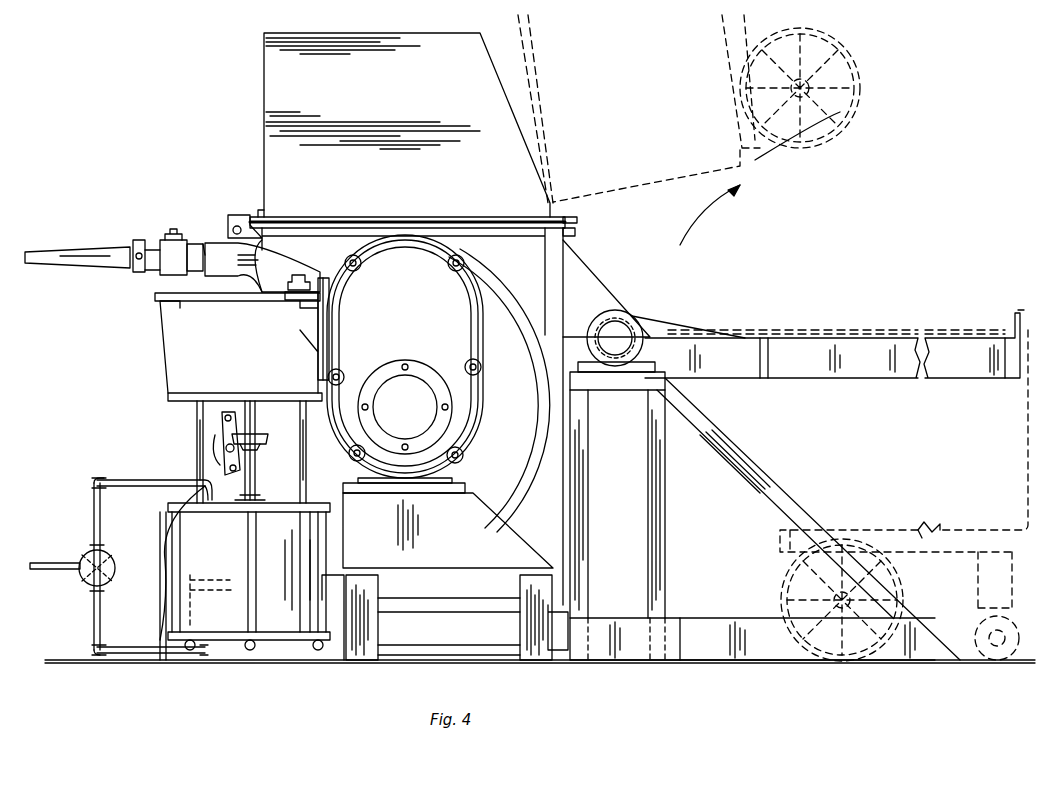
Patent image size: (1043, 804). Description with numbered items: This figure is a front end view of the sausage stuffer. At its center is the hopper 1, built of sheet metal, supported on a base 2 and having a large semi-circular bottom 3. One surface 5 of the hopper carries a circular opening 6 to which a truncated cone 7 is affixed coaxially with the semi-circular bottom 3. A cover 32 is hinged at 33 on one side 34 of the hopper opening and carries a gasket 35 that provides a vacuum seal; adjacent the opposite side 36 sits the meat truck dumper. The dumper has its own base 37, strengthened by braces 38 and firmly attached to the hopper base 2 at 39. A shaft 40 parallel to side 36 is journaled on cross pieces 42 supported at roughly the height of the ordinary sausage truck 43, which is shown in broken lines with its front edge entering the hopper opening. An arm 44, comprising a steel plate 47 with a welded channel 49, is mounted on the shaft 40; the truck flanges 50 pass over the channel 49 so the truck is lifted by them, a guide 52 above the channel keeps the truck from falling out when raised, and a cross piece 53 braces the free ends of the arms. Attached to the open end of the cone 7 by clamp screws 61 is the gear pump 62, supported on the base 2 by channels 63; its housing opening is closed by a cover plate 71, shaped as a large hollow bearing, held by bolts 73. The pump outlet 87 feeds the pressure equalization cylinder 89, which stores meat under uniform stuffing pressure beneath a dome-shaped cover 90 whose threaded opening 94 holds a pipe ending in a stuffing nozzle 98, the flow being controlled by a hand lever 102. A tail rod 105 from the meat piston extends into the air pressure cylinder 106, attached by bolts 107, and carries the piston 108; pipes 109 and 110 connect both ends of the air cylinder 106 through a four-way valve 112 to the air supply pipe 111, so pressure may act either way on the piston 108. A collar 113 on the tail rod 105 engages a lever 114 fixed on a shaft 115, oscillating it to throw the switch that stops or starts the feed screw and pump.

The hopper 1 is at (496, 250).
The base 2 is at (522, 632).
The semi-circular bottom 3 is at (530, 528).
The hopper surface 5 is at (553, 283).
The circular opening 6 is at (540, 312).
The truncated cone 7 is at (505, 413).
The cover 32 is at (318, 47).
The hinge 33 is at (240, 215).
The hinged side 34 is at (262, 216).
The gasket 35 is at (575, 220).
The hopper side 36 is at (574, 233).
The dumper base 37 is at (685, 635).
The braces 38 is at (788, 502).
The attachment 39 is at (588, 645).
The shaft 40 is at (620, 334).
The cross pieces 42 is at (640, 383).
The sausage truck 43 is at (742, 165).
The arm 44 is at (860, 372).
The steel plate 47 is at (680, 335).
The channel 49 is at (970, 375).
The flanges 50 is at (1024, 308).
The guide 52 is at (812, 330).
The cross piece 53 is at (1012, 320).
The clamp screws 61 is at (452, 268).
The gear pump 62 is at (398, 262).
The channels 63 is at (470, 553).
The cover plate 71 is at (410, 388).
The bolts 73 is at (404, 364).
The outlet 87 is at (332, 290).
The pressure equalization cylinder 89 is at (207, 345).
The dome-shaped cover 90 is at (255, 278).
The threaded female opening 94 is at (232, 245).
The stuffing nozzle 98 is at (68, 258).
The hand lever 102 is at (172, 238).
The tail rod 105 is at (252, 412).
The air pressure cylinder 106 is at (268, 622).
The bolts 107 is at (198, 406).
The piston 108 is at (205, 592).
The pipe 109 is at (126, 480).
The pipe 110 is at (148, 648).
The air pipe 111 is at (50, 570).
The four-way valve 112 is at (86, 548).
The collar 113 is at (268, 445).
The lever 114 is at (225, 425).
The shaft 115 is at (226, 448).